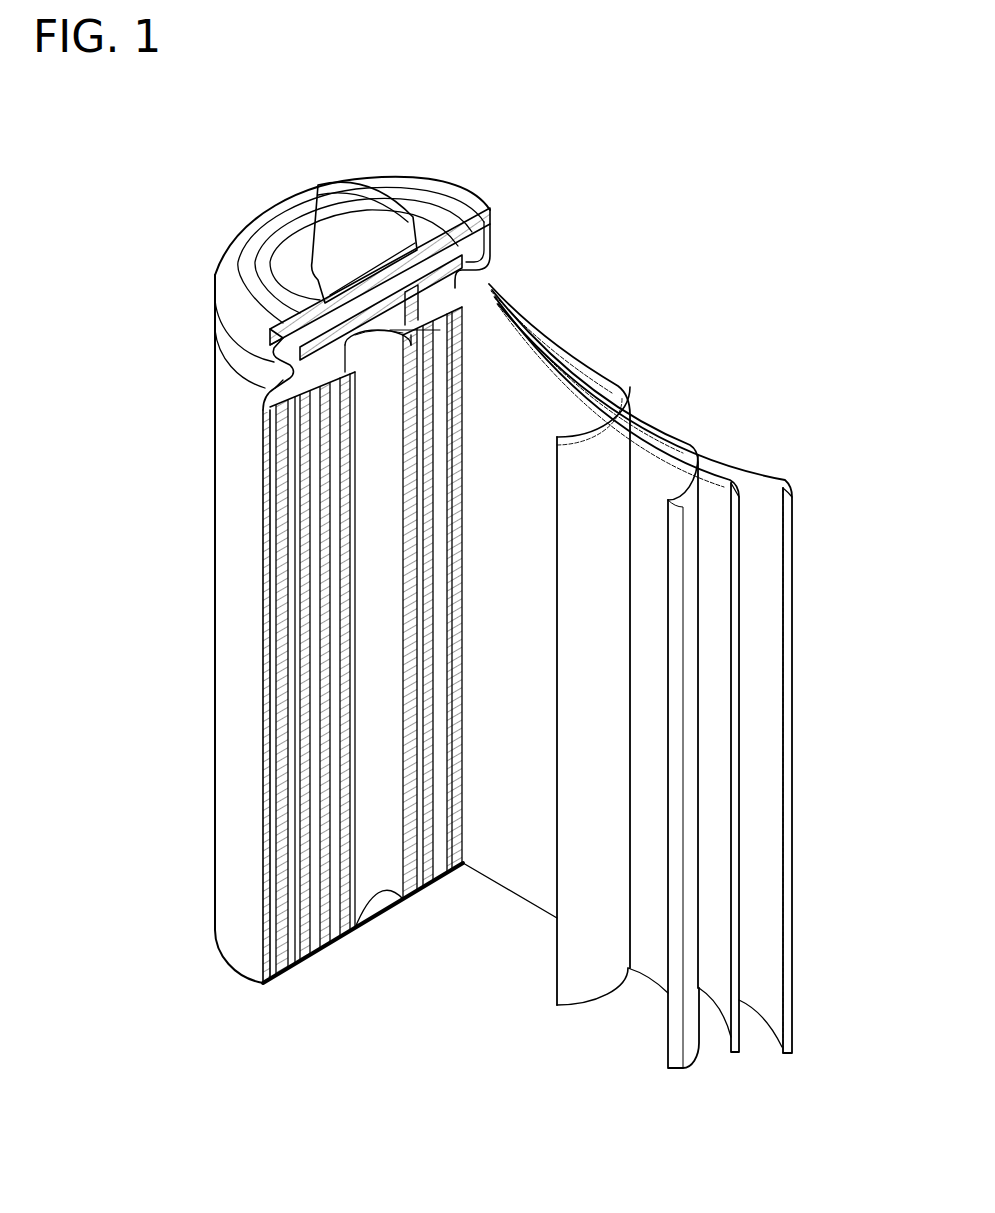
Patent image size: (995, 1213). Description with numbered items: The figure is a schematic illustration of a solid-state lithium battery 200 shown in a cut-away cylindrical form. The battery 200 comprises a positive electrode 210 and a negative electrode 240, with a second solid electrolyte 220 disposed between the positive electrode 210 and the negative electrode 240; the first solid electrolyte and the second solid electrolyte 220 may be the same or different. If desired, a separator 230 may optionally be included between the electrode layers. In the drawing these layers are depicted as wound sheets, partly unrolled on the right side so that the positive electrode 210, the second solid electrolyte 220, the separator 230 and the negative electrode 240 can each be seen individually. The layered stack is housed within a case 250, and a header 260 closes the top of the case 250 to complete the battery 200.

The battery 200 is at (687, 208).
The positive electrode 210 is at (565, 358).
The second solid electrolyte 220 is at (653, 413).
The separator 230 is at (723, 443).
The negative electrode 240 is at (778, 463).
The case 250 is at (228, 628).
The header 260 is at (350, 225).